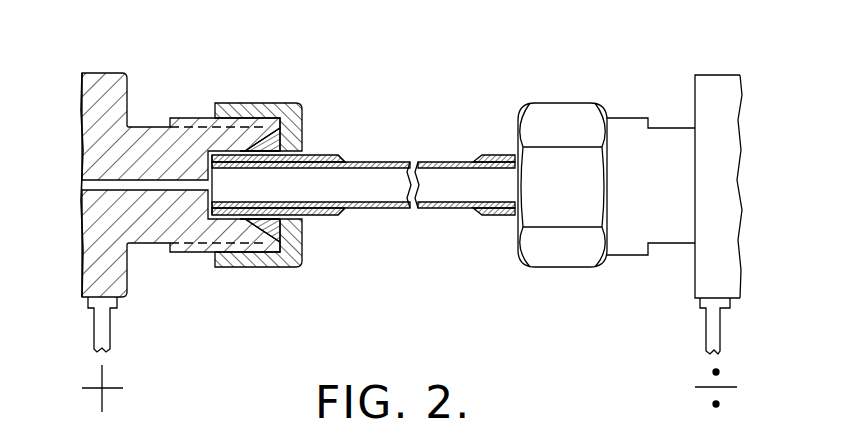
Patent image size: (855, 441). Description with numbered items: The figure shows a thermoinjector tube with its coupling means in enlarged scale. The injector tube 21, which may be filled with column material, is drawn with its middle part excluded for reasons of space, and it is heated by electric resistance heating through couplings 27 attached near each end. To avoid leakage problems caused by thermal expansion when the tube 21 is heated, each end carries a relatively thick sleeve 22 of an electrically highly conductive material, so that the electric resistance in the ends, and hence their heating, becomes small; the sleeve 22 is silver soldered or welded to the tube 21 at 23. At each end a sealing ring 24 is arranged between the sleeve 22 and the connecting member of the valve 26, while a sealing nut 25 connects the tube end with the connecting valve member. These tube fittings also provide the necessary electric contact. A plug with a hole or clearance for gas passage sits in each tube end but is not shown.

The injector tube 21 is at (382, 160).
The sleeve 22 is at (317, 156).
The soldered or welded joint 23 is at (347, 161).
The sealing ring 24 is at (286, 113).
The sealing nut 25 is at (233, 104).
The connecting member of the valve 26 is at (102, 75).
The couplings 27 is at (112, 330).